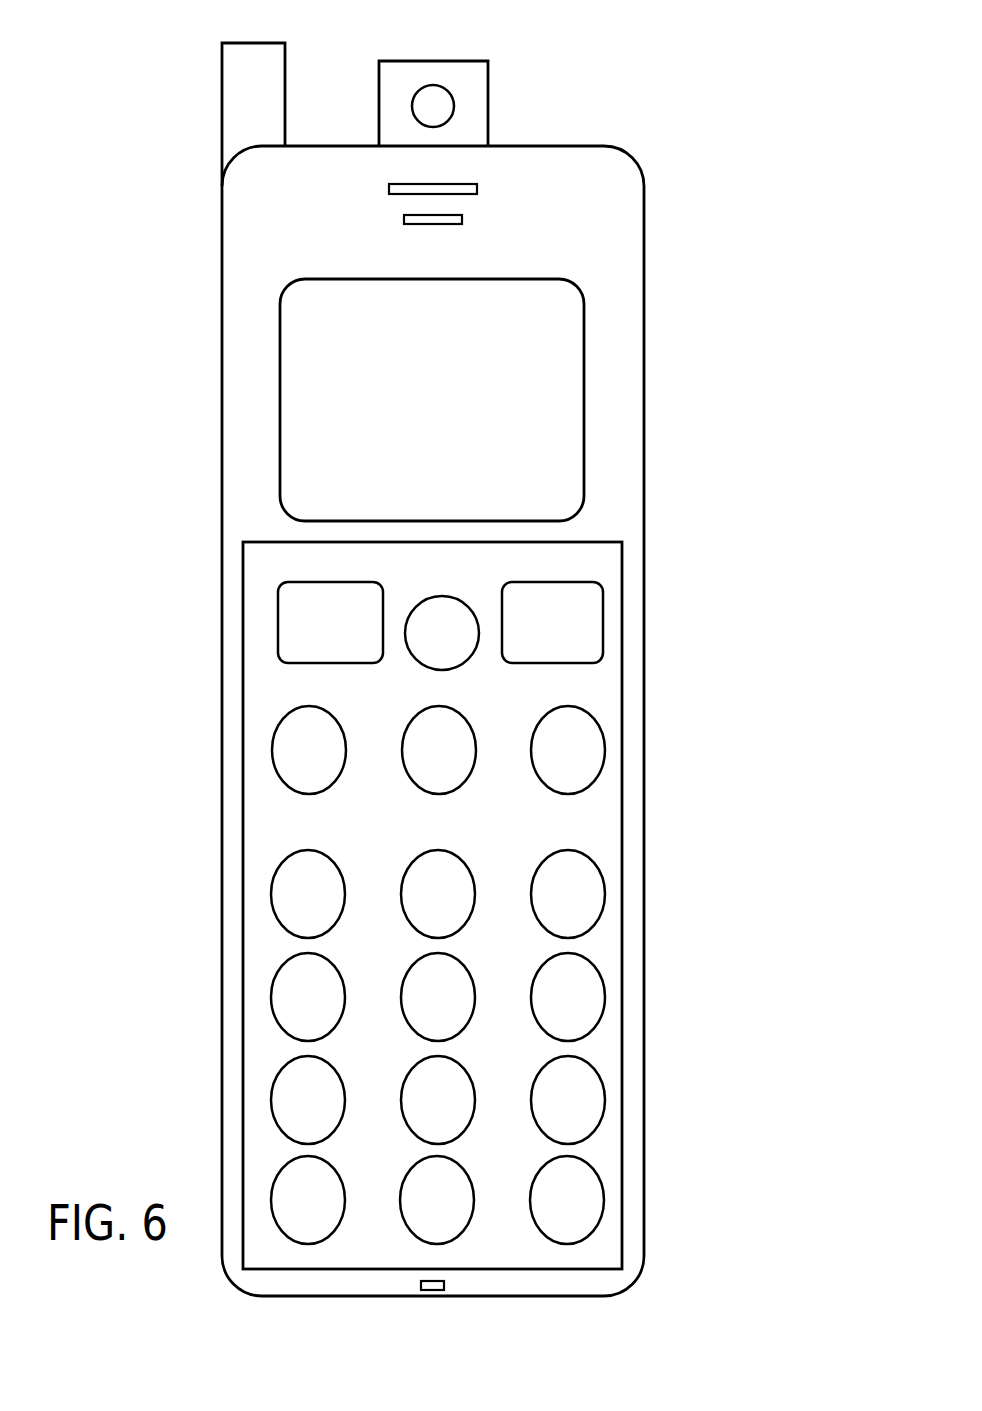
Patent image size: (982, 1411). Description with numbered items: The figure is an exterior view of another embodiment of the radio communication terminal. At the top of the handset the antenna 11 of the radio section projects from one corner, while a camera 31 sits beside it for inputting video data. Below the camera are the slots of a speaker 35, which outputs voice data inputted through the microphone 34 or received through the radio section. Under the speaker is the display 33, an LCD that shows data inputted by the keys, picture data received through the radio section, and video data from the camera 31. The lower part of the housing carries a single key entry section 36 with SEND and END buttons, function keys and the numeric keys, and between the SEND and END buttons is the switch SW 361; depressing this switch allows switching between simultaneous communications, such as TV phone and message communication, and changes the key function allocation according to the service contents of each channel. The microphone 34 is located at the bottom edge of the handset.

The antenna 11 is at (222, 103).
The camera 31 is at (489, 72).
The display 33 is at (321, 278).
The microphone 34 is at (431, 1291).
The speaker 35 is at (487, 205).
The key entry section 36 is at (466, 905).
The switch SW 361 is at (468, 660).